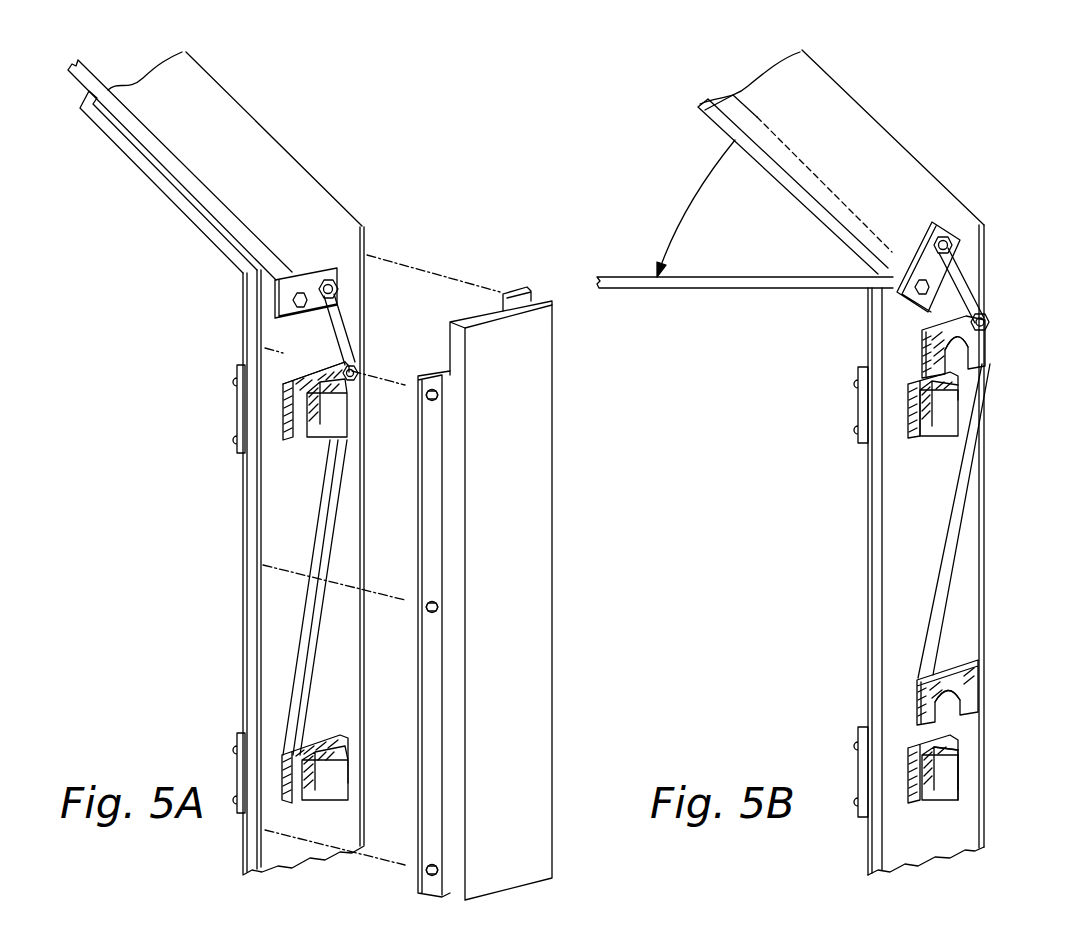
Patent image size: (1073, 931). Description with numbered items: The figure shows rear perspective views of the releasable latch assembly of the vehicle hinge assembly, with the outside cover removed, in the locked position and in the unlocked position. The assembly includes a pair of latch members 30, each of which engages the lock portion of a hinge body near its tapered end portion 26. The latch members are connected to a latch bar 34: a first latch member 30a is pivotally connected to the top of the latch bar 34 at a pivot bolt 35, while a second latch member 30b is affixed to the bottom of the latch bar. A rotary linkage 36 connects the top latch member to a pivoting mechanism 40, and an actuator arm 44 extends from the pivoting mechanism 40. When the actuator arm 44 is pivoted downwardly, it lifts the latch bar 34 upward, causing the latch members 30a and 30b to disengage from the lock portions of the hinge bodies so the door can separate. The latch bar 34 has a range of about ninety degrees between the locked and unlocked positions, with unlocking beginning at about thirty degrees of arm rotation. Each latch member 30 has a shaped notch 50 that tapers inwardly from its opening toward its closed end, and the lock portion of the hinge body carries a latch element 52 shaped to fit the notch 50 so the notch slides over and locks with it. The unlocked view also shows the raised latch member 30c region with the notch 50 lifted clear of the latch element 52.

In FIG. 5A, the end portion 26 is at (300, 410).
In FIG. 5B, the end portion 26 is at (945, 417).
In FIG. 5A, the latch member 30 is at (310, 366).
In FIG. 5A, the first latch member 30a is at (283, 392).
In FIG. 5B, the second latch member 30b is at (973, 702).
In FIG. 5B, the upper hook 30c is at (922, 330).
In FIG. 5A, the latch bar 34 is at (325, 547).
In FIG. 5B, the latch bar 34 is at (954, 521).
In FIG. 5B, the pivot bolt 35 is at (990, 322).
In FIG. 5A, the rotary linkage 36 is at (340, 326).
In FIG. 5B, the rotary linkage 36 is at (955, 278).
In FIG. 5A, the pivoting mechanism 40 is at (304, 268).
In FIG. 5B, the pivoting mechanism 40 is at (921, 233).
In FIG. 5A, the actuator arm 44 is at (201, 183).
In FIG. 5B, the actuator arm 44 is at (725, 280).
In FIG. 5B, the shaped notch 50 is at (962, 351).
In FIG. 5B, the latch element 52 is at (942, 745).